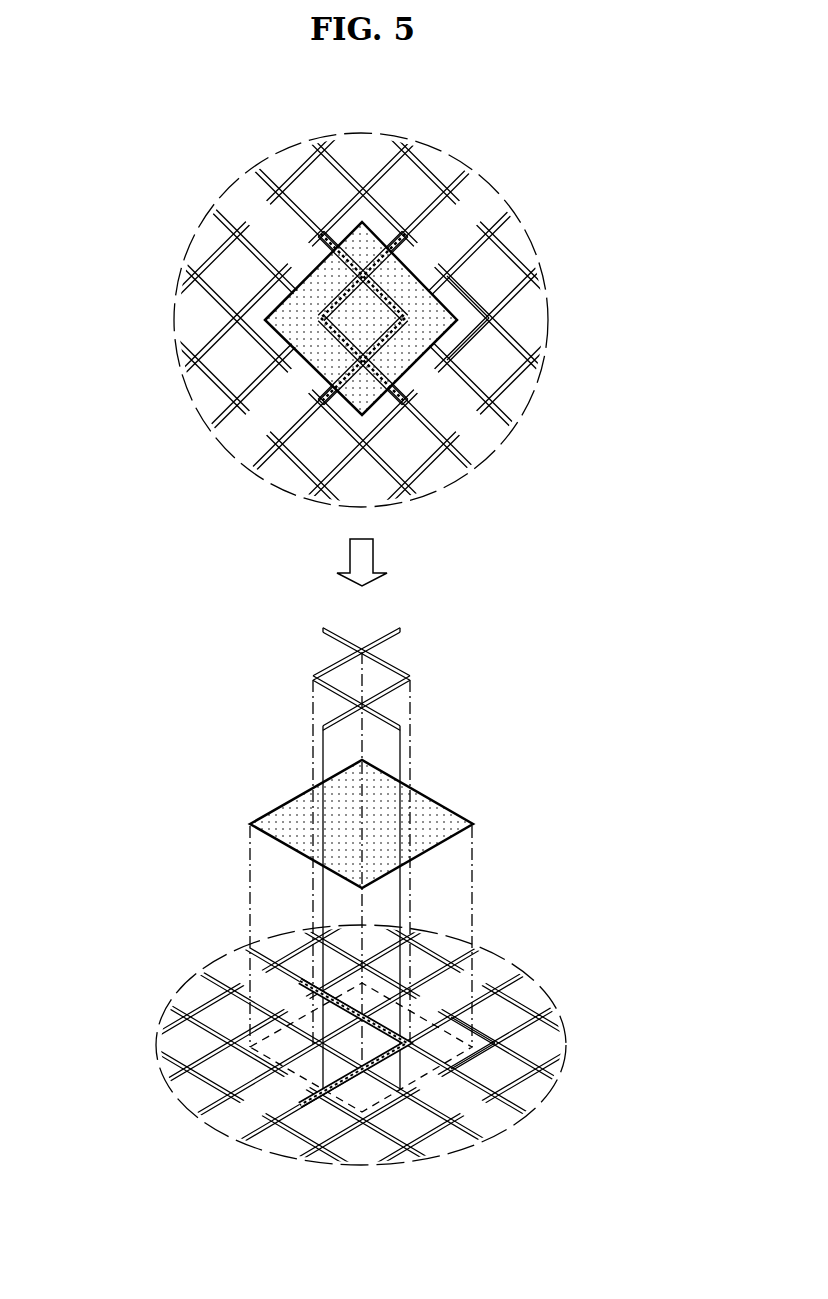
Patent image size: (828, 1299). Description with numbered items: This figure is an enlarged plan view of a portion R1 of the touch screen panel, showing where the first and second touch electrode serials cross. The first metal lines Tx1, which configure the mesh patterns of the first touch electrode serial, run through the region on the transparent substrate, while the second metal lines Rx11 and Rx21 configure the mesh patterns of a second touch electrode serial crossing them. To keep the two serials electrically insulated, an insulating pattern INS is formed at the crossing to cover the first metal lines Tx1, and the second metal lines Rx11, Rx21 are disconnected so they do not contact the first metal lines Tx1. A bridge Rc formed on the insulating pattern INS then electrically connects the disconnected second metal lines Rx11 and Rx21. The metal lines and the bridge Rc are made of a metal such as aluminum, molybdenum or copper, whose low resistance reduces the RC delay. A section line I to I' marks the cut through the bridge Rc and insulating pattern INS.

The portion R1 is at (182, 161).
The first metal lines Tx1 is at (212, 328).
The second metal line Rx11 is at (427, 172).
The second metal line Rx21 is at (458, 448).
The insulating pattern INS is at (445, 300).
The bridge Rc is at (407, 280).
The section line start I is at (322, 584).
The section line end I' is at (327, 782).